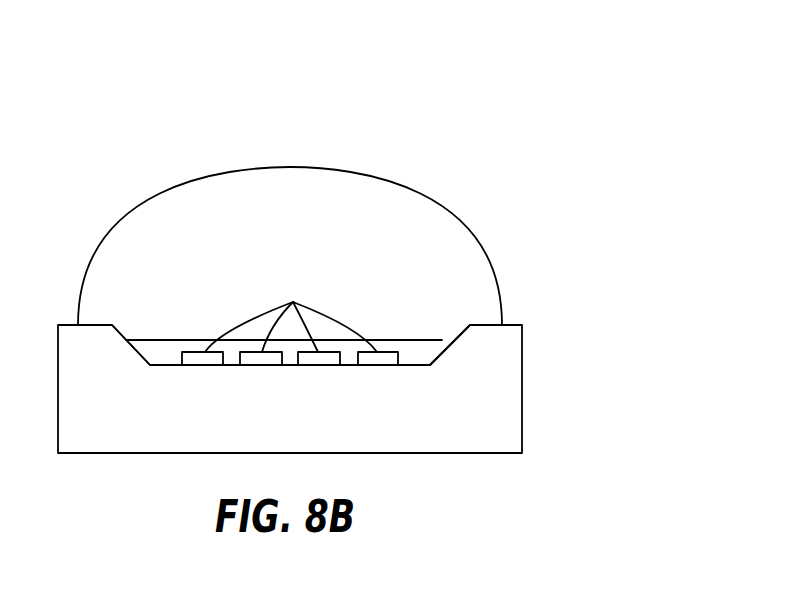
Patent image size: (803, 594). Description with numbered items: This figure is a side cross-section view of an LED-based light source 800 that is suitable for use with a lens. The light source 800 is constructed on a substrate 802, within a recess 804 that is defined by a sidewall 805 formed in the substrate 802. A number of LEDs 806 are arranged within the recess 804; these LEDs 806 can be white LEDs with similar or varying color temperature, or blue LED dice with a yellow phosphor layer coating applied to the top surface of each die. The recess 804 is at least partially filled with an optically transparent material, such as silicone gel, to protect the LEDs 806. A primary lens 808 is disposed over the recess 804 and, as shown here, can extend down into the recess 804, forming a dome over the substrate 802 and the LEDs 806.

The LED-based light source 800 is at (213, 140).
The substrate 802 is at (128, 435).
The recess 804 is at (425, 352).
The sidewall 805 is at (140, 352).
The LEDs 806 is at (293, 302).
The primary lens 808 is at (452, 220).